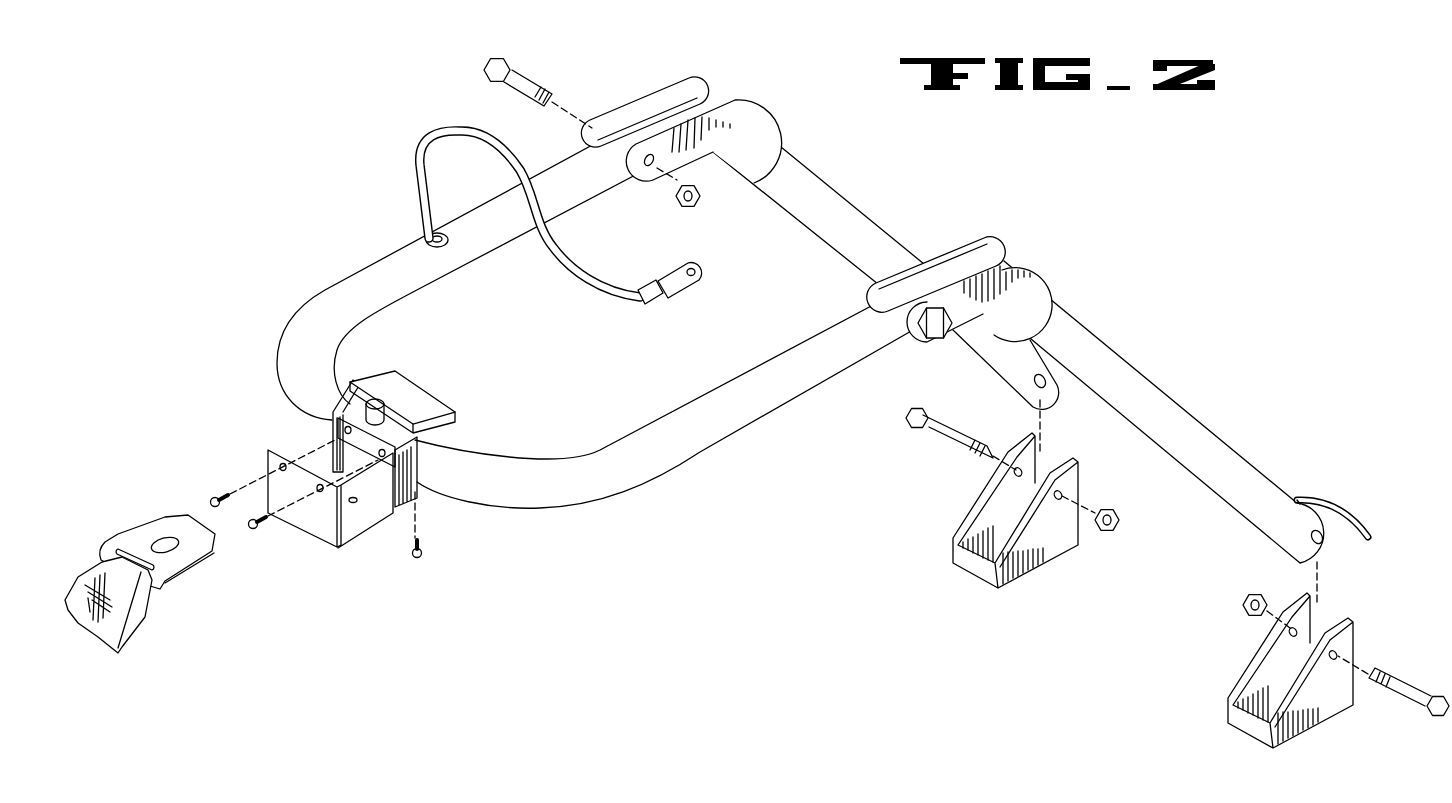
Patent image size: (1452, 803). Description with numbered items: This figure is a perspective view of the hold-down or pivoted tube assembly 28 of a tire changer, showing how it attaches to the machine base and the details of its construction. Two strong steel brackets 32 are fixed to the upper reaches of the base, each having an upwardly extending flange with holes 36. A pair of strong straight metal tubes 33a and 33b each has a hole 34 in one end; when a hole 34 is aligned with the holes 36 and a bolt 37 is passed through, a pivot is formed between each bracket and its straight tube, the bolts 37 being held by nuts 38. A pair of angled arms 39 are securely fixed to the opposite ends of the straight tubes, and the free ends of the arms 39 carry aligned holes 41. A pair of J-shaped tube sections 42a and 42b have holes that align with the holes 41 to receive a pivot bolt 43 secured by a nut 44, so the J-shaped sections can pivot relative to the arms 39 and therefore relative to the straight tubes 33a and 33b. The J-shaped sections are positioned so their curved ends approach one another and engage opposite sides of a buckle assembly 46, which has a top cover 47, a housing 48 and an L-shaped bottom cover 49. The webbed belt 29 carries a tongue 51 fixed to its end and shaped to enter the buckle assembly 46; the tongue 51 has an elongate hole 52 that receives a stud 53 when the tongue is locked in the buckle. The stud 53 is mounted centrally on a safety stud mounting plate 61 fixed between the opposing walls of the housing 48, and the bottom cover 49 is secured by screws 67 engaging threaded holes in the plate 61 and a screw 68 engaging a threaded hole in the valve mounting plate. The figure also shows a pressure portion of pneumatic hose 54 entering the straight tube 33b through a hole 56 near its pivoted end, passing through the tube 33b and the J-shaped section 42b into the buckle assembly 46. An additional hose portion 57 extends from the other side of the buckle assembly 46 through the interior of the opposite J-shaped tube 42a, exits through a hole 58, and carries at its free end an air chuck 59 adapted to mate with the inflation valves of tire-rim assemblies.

The hold-down or pivoted tube assembly 28 is at (290, 205).
The webbed belt 29 is at (124, 644).
The brackets 32 is at (1050, 549).
The straight metal tube 33a is at (805, 163).
The straight metal tube 33b is at (1148, 378).
The hole 34 is at (1047, 380).
The holes 36 is at (1061, 493).
The bolt 37 is at (966, 440).
The nuts 38 is at (1247, 600).
The angled arms 39 is at (742, 110).
The aligned holes 41 is at (648, 167).
The J-shaped tube section 42a is at (387, 257).
The J-shaped tube section 42b is at (658, 470).
The pivot bolt 43 is at (523, 78).
The nut 44 is at (686, 210).
The buckle assembly 46 is at (386, 407).
The top cover 47 is at (419, 391).
The housing 48 is at (455, 431).
The bottom cover 49 is at (357, 535).
The tongue 51 is at (171, 545).
The elongate hole 52 is at (168, 540).
The stud 53 is at (377, 405).
The pressure portion of pneumatic hose 54 is at (1347, 514).
The hole 56 is at (1295, 500).
The additional portion of pneumatic hose 57 is at (468, 131).
The hole 58 is at (446, 230).
The air chuck 59 is at (697, 265).
The safety stud mounting plate 61 is at (331, 421).
The screws 67 is at (250, 530).
The screw 68 is at (423, 556).